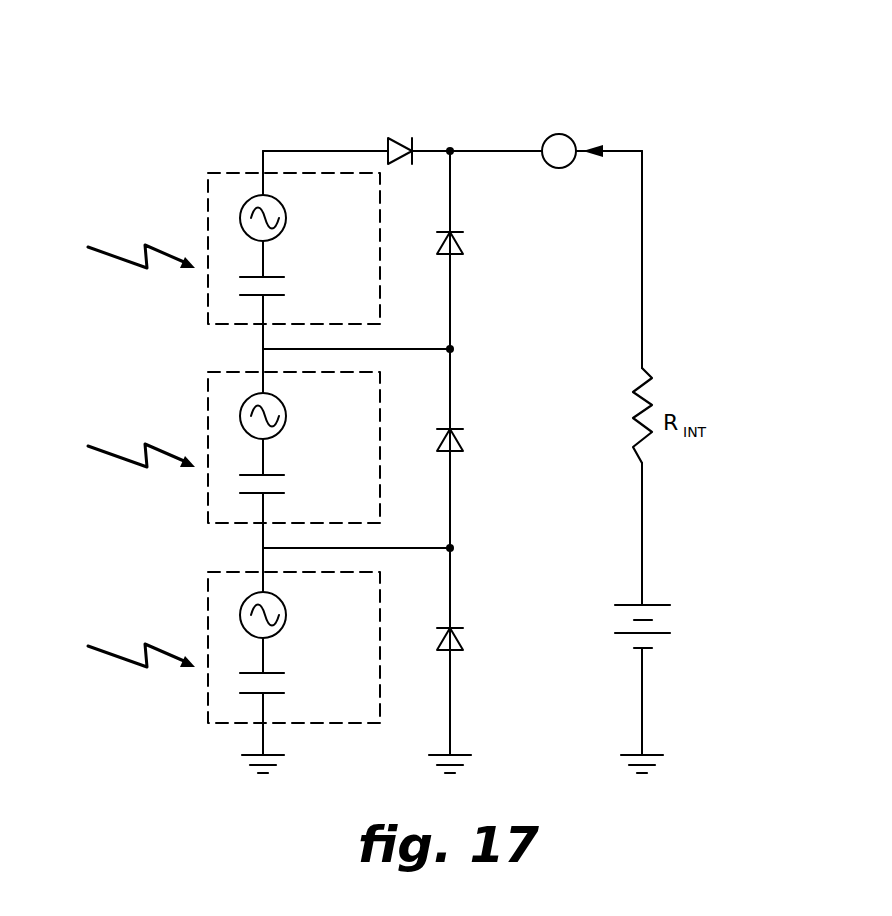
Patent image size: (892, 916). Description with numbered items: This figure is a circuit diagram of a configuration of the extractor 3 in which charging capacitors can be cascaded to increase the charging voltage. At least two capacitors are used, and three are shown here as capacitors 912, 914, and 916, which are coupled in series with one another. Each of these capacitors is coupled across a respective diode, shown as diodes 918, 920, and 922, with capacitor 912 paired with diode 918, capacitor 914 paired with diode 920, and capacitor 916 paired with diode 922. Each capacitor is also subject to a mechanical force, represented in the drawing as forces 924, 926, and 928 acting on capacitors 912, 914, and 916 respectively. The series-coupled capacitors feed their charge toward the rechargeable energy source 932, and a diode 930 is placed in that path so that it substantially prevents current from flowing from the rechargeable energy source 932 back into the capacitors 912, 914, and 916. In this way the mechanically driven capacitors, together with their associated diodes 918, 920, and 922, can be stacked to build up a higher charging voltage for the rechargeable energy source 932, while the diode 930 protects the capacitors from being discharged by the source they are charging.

The extractor 3 is at (626, 102).
The capacitor 912 is at (270, 674).
The capacitor 914 is at (270, 476).
The capacitor 916 is at (270, 278).
The diode 918 is at (464, 638).
The diode 920 is at (464, 439).
The diode 922 is at (464, 242).
The force 924 is at (158, 651).
The force 926 is at (158, 451).
The force 928 is at (158, 252).
The diode 930 is at (398, 144).
The rechargeable energy source 932 is at (663, 604).